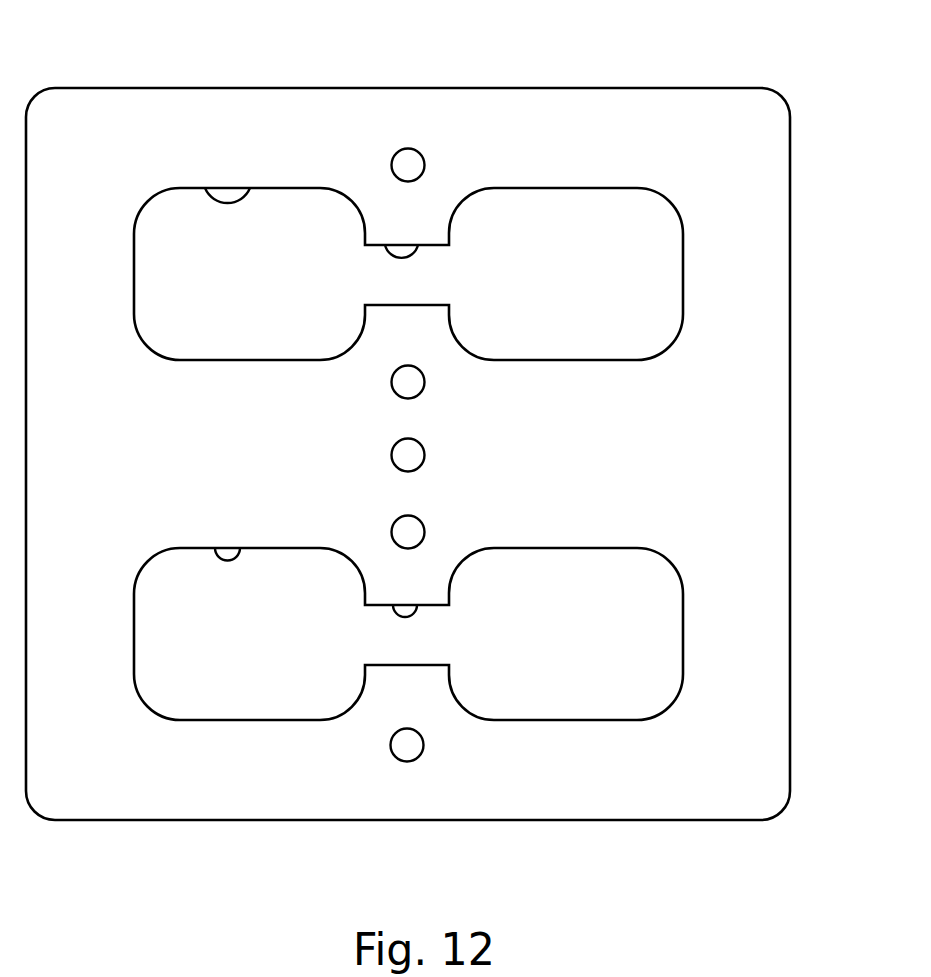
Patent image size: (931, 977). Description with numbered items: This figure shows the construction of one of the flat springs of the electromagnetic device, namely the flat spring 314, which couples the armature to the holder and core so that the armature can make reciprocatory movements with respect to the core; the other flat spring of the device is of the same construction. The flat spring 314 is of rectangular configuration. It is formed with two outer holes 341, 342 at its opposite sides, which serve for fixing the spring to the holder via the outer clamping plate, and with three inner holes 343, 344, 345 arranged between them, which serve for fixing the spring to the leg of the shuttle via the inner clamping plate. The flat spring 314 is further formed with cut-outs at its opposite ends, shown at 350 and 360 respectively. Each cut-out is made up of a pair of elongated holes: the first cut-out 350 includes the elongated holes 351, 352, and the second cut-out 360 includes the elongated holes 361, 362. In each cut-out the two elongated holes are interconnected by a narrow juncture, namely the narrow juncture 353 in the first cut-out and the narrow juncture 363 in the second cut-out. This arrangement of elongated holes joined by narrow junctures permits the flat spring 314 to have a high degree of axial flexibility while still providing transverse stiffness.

The flat spring 314 is at (790, 98).
The outer hole 341 is at (398, 158).
The outer hole 342 is at (397, 748).
The inner hole 343 is at (398, 387).
The inner hole 344 is at (393, 453).
The inner hole 345 is at (398, 525).
The cut-out 350 is at (542, 188).
The elongated hole 351 is at (618, 188).
The elongated hole 352 is at (208, 190).
The narrow juncture 353 is at (389, 248).
The cut-out 360 is at (542, 548).
The elongated hole 361 is at (647, 548).
The elongated hole 362 is at (213, 552).
The narrow juncture 363 is at (400, 612).